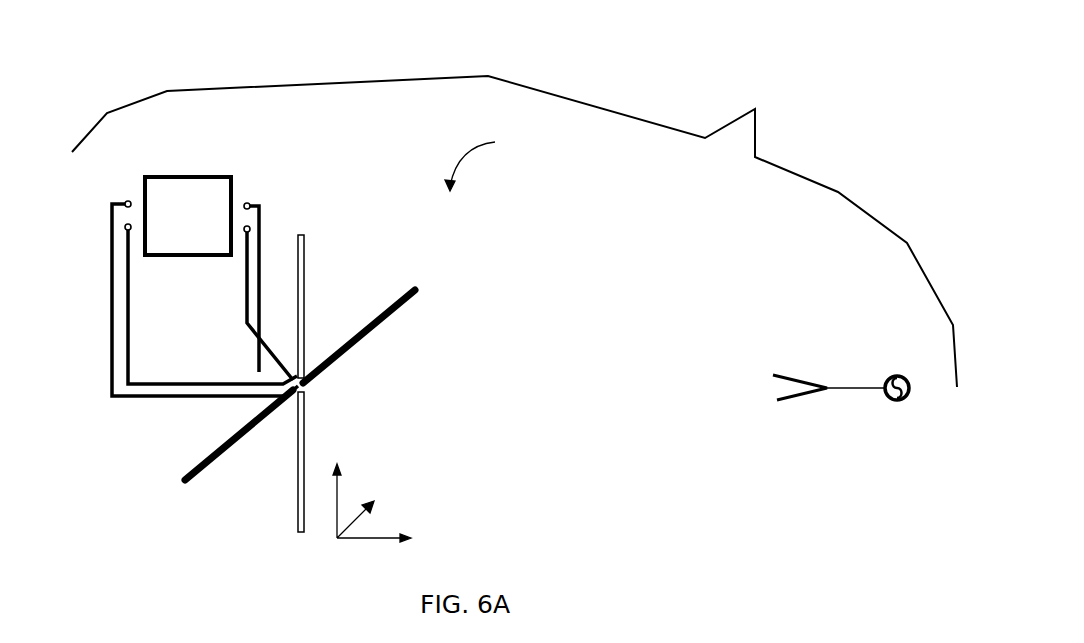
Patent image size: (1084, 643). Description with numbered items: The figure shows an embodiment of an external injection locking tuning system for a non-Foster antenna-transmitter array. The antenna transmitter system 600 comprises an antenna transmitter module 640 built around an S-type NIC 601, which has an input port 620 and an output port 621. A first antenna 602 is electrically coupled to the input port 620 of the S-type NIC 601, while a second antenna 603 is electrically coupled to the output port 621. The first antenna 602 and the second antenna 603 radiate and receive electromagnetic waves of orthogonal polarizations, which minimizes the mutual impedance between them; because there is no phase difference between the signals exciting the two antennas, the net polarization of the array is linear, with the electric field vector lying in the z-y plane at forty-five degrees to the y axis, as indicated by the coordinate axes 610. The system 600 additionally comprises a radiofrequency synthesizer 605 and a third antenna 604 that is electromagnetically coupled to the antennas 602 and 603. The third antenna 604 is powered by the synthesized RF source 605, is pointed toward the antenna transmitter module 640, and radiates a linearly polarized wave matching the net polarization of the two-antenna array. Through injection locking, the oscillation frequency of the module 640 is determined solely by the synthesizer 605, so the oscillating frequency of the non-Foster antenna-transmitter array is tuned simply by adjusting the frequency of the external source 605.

The antenna transmitter system 600 is at (514, 231).
The S-type NIC 601 is at (188, 175).
The first antenna 602 is at (413, 290).
The second antenna 603 is at (305, 235).
The third antenna 604 is at (797, 375).
The radiofrequency synthesizer 605 is at (905, 377).
The coordinate axes 610 is at (362, 542).
The input port 620 is at (125, 200).
The output port 621 is at (250, 203).
The antenna transmitter module 640 is at (498, 155).